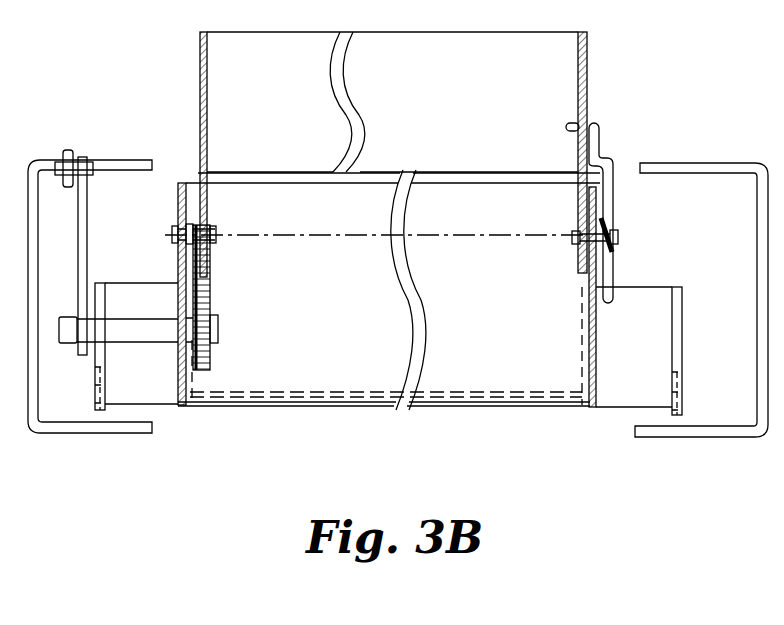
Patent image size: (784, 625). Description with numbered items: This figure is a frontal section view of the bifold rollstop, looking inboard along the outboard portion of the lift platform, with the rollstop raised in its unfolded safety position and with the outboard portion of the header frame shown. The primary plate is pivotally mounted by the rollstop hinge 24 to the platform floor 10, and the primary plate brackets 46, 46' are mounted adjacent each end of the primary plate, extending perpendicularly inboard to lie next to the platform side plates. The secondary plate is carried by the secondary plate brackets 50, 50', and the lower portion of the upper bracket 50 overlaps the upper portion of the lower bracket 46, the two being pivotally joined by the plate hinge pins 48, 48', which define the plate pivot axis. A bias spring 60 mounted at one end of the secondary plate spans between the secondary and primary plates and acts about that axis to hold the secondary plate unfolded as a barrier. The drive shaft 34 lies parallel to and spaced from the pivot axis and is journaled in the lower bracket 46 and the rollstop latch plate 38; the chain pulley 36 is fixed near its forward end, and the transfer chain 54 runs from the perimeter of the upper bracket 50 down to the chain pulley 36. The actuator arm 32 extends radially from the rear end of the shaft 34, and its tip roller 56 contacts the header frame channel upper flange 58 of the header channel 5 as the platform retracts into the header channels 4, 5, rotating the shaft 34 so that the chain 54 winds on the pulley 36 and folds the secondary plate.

The header channel 4 is at (700, 437).
The header channel 5 is at (118, 433).
The platform floor 10 is at (497, 392).
The rollstop hinge 24 is at (448, 407).
The actuator arm 32 is at (80, 215).
The drive shaft 34 is at (107, 318).
The chain pulley 36 is at (206, 360).
The rollstop latch plate 38 is at (95, 397).
The primary plate bracket 46 is at (154, 291).
The primary plate bracket 46' is at (618, 297).
The plate hinge pin 48 is at (220, 220).
The plate hinge pin 48' is at (633, 230).
The secondary plate bracket 50 is at (177, 154).
The secondary plate bracket 50' is at (622, 152).
The transfer chain 54 is at (212, 298).
The tip roller 56 is at (68, 150).
The header frame channel upper flange 58 is at (118, 160).
The bias spring 60 is at (602, 150).